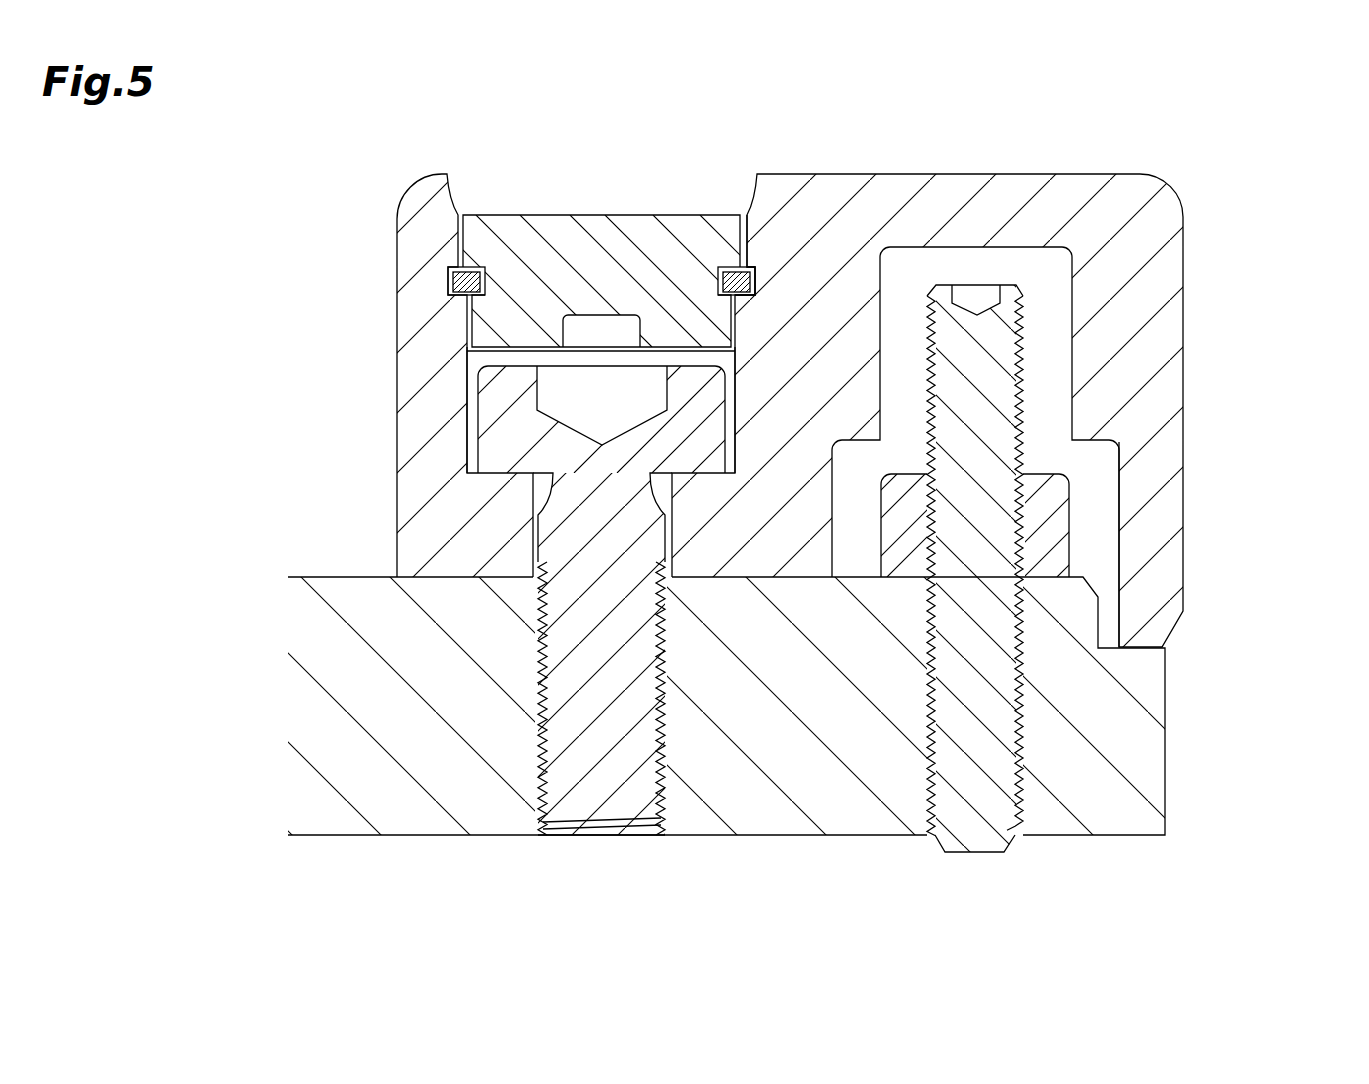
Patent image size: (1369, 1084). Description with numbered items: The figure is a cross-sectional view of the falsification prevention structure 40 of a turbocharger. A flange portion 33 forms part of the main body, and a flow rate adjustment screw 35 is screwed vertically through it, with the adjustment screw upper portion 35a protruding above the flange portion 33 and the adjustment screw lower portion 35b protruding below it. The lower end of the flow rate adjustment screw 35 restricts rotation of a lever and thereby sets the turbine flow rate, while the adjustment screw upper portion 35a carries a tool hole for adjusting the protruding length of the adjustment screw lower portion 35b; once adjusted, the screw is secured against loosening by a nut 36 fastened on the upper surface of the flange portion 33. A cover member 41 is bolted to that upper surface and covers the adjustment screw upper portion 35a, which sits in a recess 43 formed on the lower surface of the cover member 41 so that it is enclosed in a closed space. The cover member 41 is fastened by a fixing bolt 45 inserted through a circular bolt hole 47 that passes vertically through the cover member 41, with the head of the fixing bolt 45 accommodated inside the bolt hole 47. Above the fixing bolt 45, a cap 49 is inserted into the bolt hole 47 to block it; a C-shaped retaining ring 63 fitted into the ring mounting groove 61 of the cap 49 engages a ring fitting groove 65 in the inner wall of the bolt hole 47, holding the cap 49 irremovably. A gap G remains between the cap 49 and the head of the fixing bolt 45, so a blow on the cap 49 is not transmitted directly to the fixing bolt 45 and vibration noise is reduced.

The flange portion 33 is at (1130, 730).
The flow rate adjustment screw 35 is at (1097, 526).
The adjustment screw upper portion 35a is at (985, 370).
The adjustment screw lower portion 35b is at (1013, 842).
The nut 36 is at (1042, 520).
The falsification prevention structure 40 is at (1280, 161).
The cover member 41 is at (1140, 184).
The recess 43 is at (1108, 520).
The fixing bolt 45 is at (500, 445).
The bolt hole 47 is at (470, 408).
The cap 49 is at (570, 245).
The ring mounting groove 61 is at (735, 267).
The retaining ring 63 is at (746, 262).
The ring fitting groove 65 is at (468, 267).
The gap G is at (502, 357).